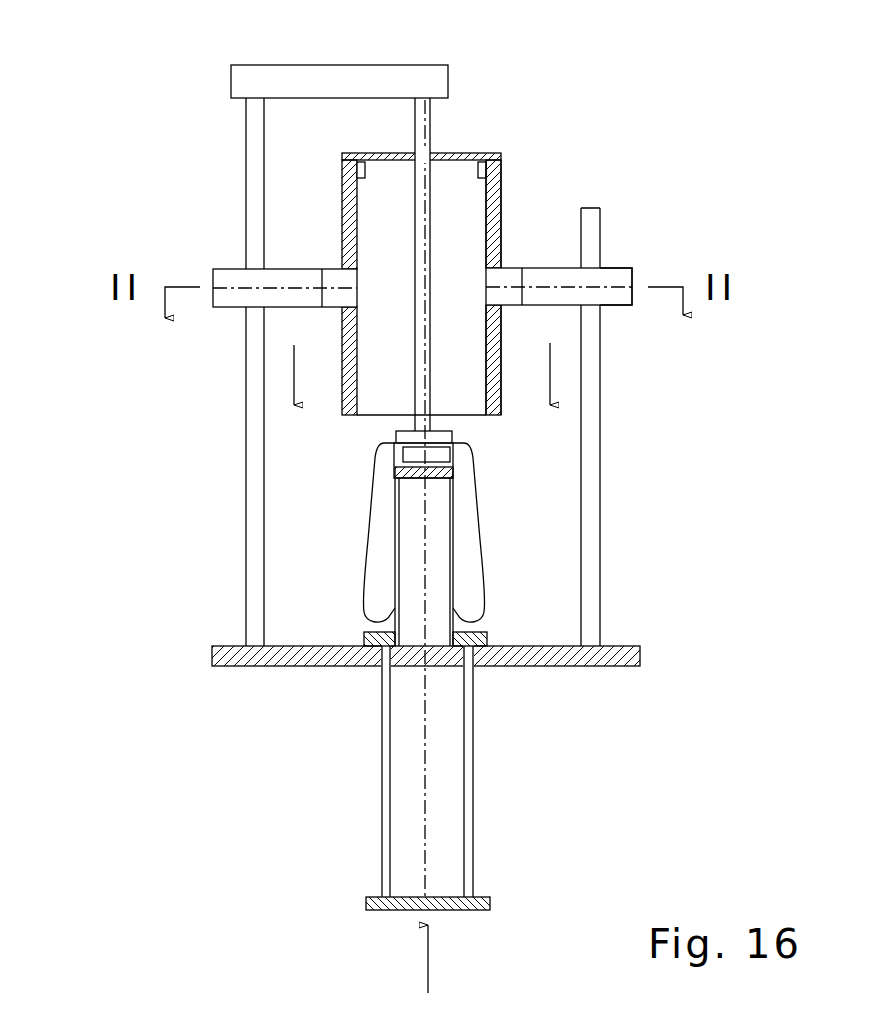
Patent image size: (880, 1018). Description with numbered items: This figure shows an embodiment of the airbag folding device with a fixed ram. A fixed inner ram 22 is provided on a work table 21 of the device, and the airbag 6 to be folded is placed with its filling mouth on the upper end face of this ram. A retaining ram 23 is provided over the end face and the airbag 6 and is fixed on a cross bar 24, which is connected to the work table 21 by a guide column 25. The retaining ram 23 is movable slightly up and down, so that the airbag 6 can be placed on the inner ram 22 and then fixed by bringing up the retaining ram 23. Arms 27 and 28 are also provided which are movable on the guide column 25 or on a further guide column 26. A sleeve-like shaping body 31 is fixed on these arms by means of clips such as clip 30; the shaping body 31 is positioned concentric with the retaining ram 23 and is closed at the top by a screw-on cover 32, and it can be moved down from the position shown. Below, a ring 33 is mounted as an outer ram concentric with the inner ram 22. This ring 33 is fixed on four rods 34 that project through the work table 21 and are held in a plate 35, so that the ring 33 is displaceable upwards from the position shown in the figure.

The airbag 6 is at (365, 568).
The work table 21 is at (640, 648).
The inner ram 22 is at (357, 657).
The retaining ram 23 is at (450, 436).
The cross bar 24 is at (318, 80).
The guide column 25 is at (252, 168).
The further guide column 26 is at (592, 580).
The arm 27 is at (242, 295).
The arm 28 is at (623, 307).
The clip 30 is at (515, 272).
The shaping body 31 is at (502, 203).
The screw-on cover 32 is at (480, 152).
The ring 33 is at (488, 668).
The rods 34 is at (390, 848).
The plate 35 is at (485, 898).